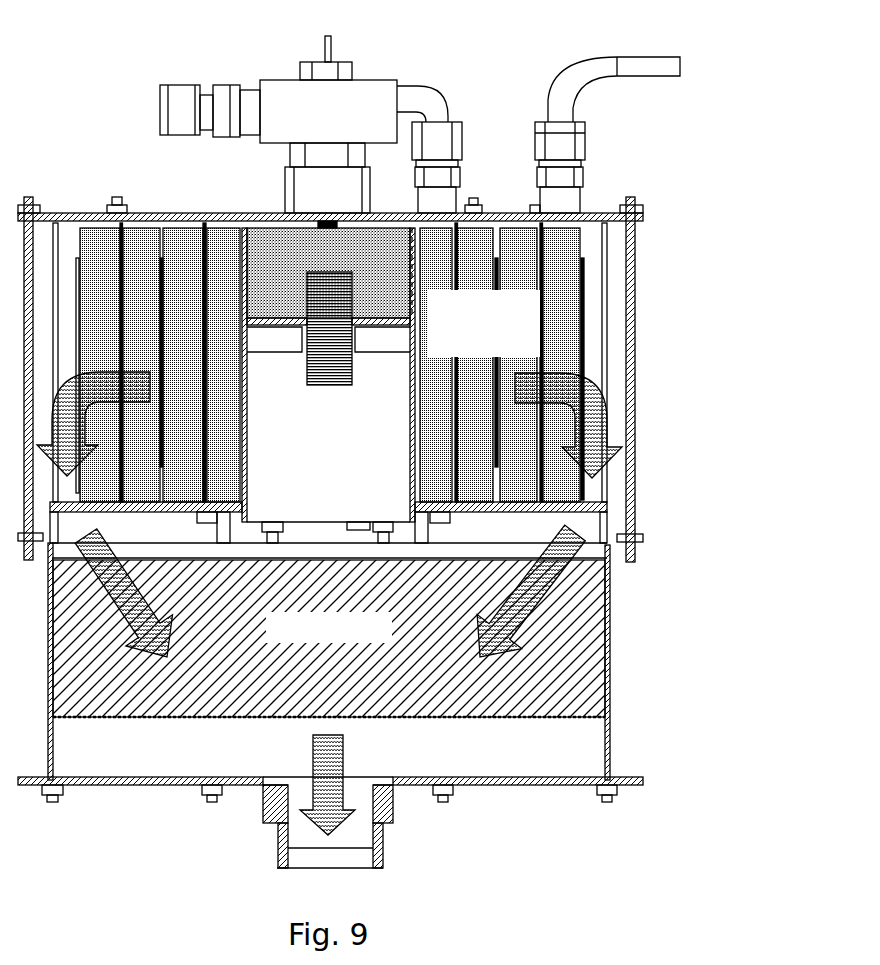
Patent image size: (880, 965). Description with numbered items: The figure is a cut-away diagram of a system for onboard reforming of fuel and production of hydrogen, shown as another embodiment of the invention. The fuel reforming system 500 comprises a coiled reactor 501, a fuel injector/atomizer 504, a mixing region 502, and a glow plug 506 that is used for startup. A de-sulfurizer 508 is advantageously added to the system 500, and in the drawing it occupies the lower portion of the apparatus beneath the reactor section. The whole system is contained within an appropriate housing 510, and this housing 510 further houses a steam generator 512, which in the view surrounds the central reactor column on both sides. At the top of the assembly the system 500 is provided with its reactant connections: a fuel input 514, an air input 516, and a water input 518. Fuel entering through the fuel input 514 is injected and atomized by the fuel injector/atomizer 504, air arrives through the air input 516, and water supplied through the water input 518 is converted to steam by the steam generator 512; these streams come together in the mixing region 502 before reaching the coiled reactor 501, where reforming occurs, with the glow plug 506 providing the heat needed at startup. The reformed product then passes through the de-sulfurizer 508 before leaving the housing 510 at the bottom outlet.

The fuel reforming system 500 is at (800, 188).
The coiled reactor 501 is at (273, 245).
The mixing region 502 is at (326, 224).
The fuel injector/atomizer 504 is at (367, 90).
The glow plug 506 is at (322, 386).
The de-sulfurizer 508 is at (590, 655).
The housing 510 is at (95, 180).
The steam generator 512 is at (572, 306).
The fuel input 514 is at (292, 22).
The air input 516 is at (132, 99).
The water input 518 is at (695, 67).